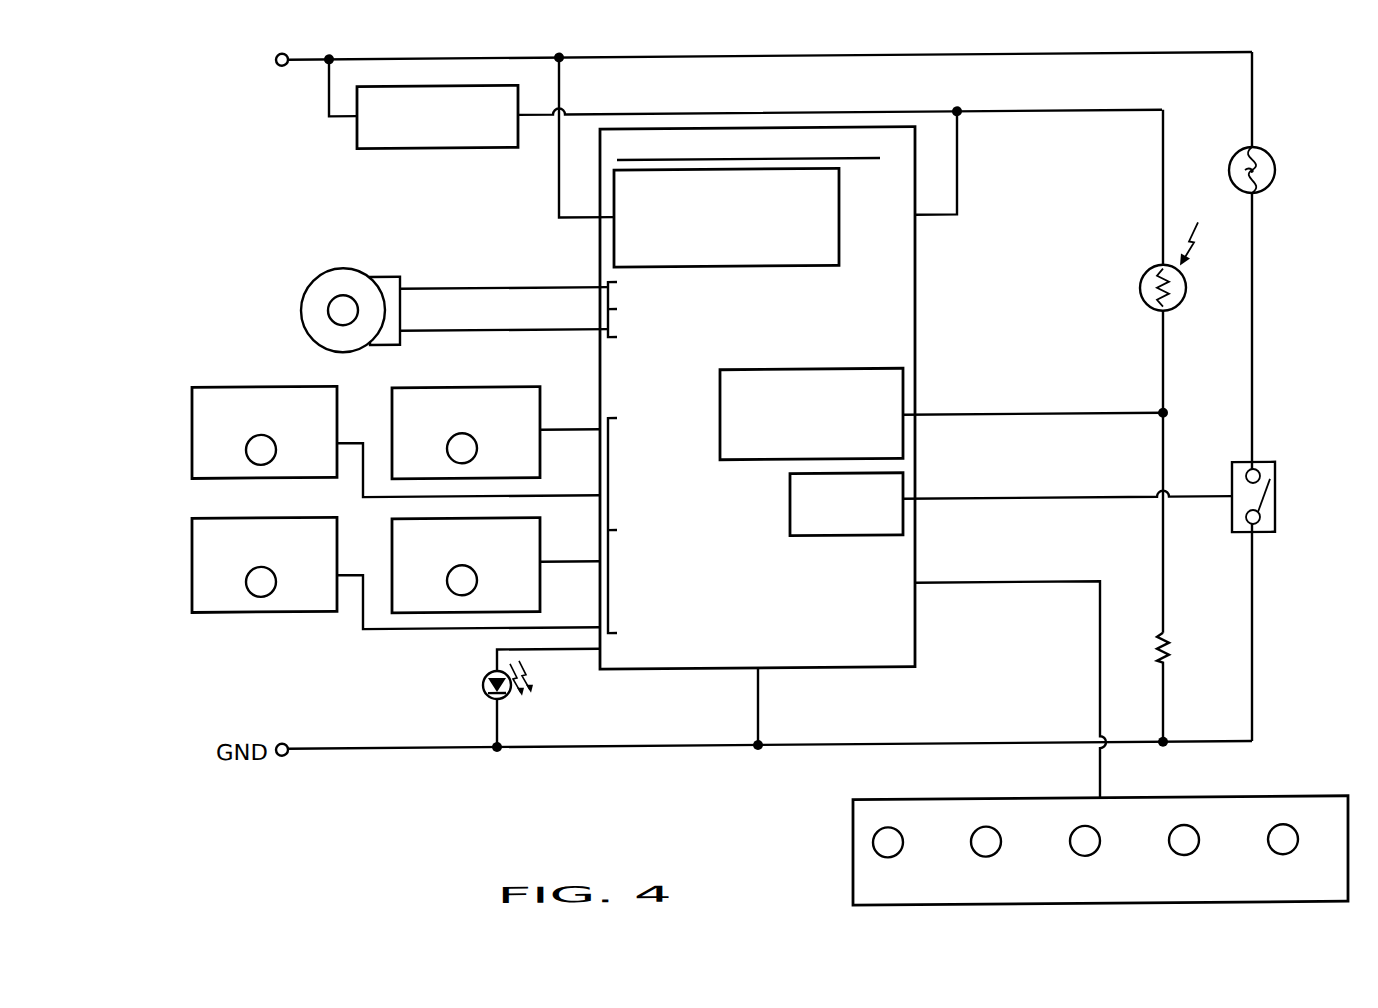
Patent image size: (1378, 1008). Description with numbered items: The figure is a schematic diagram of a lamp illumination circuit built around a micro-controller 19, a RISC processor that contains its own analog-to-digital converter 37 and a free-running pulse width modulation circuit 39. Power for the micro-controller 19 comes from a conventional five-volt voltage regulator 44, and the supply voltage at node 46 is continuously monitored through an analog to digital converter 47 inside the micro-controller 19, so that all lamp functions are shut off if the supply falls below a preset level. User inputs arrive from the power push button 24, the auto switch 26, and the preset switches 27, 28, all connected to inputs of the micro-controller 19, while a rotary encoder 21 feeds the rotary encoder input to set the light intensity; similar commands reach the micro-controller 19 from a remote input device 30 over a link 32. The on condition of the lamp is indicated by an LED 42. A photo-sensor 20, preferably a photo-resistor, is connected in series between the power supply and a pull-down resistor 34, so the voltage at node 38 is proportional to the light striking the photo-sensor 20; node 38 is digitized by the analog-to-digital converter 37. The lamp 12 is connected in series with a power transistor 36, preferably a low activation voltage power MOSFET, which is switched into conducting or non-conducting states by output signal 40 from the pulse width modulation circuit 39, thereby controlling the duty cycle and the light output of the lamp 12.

The lamp 12 is at (1275, 190).
The micro-controller 19 is at (905, 283).
The photo-sensor 20 is at (1140, 289).
The rotary encoder 21 is at (318, 279).
The power push button 24 is at (246, 452).
The auto switch 26 is at (477, 453).
The preset switch 27 is at (246, 584).
The preset switch 28 is at (477, 584).
The remote input device 30 is at (852, 837).
The link 32 is at (1100, 775).
The pull-down resistor 34 is at (1178, 652).
The power transistor 36 is at (1275, 520).
The analog-to-digital converter 37 is at (883, 376).
The node 38 is at (1168, 418).
The pulse width modulation circuit 39 is at (790, 543).
The output signal 40 is at (1058, 493).
The LED 42 is at (483, 689).
The voltage regulator 44 is at (420, 152).
The node 46 is at (562, 66).
The analog to digital converter 47 is at (840, 197).